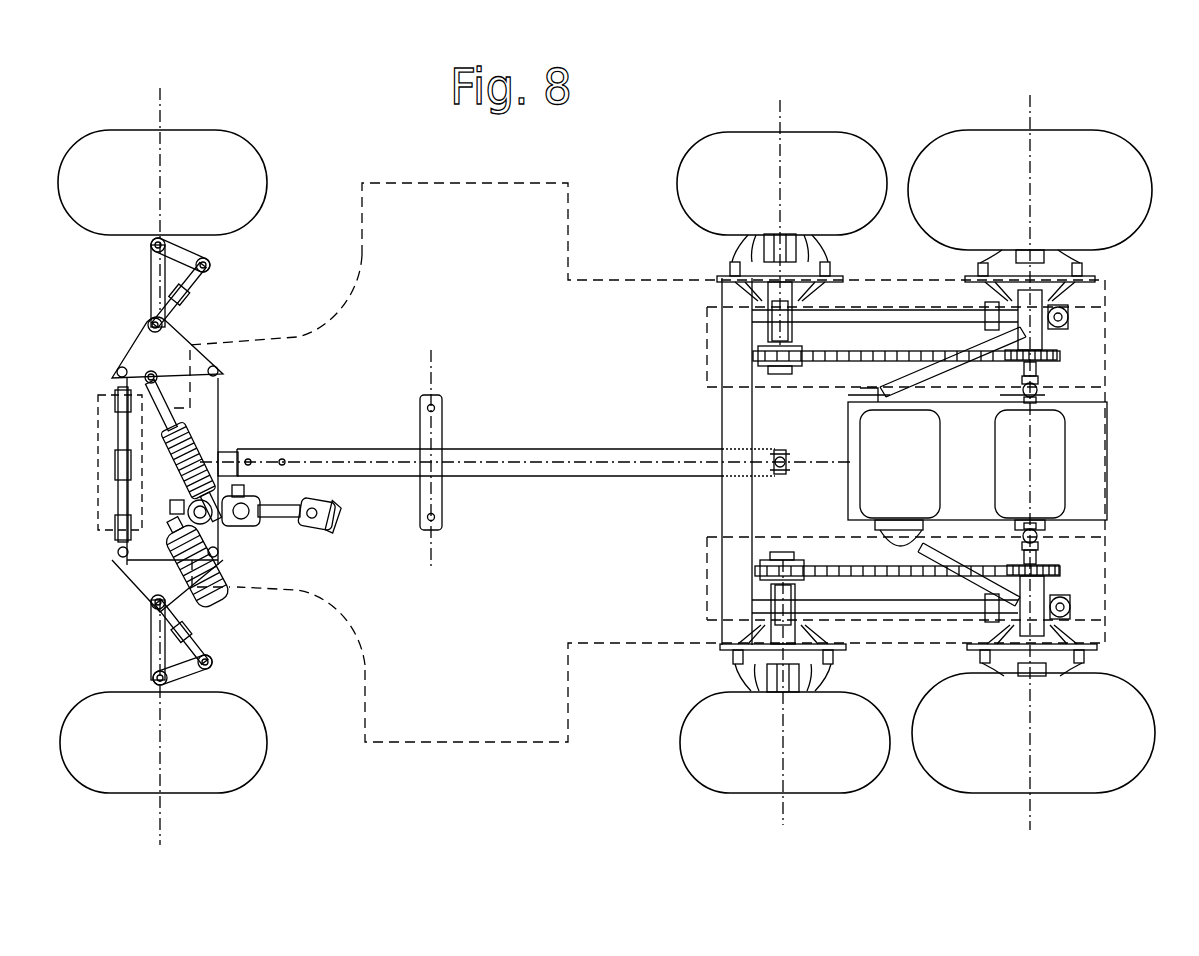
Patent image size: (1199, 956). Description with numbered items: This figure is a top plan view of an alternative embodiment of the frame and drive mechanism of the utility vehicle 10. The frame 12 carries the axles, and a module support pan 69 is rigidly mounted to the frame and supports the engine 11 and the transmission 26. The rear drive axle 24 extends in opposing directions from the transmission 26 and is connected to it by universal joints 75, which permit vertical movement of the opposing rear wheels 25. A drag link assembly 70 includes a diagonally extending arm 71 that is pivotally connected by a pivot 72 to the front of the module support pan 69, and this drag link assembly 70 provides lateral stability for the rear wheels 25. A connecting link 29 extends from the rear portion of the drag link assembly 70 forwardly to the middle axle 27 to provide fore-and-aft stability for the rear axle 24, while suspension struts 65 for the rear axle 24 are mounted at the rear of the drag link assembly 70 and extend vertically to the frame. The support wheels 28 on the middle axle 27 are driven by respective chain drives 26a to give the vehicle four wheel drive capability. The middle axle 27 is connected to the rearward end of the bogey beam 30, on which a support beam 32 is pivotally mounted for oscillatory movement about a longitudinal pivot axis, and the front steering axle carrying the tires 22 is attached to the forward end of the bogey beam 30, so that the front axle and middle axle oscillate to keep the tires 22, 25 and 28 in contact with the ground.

The utility vehicle 10 is at (320, 112).
The engine 11 is at (945, 440).
The frame 12 is at (515, 745).
The tires 22 is at (128, 130).
The rear drive axle 24 is at (1048, 352).
The rear wheels 25 is at (1135, 145).
The transmission 26 is at (1065, 445).
The chain drives 26a is at (740, 392).
The middle axle 27 is at (735, 245).
The support wheels 28 is at (762, 132).
The connecting link 29 is at (865, 305).
The bogey beam 30 is at (340, 448).
The support beam 32 is at (722, 432).
The suspension struts 65 is at (1090, 316).
The module support pan 69 is at (848, 468).
The drag link assembly 70 is at (1005, 278).
The diagonally extending arm 71 is at (962, 330).
The pivot 72 is at (895, 386).
The universal joints 75 is at (1040, 388).